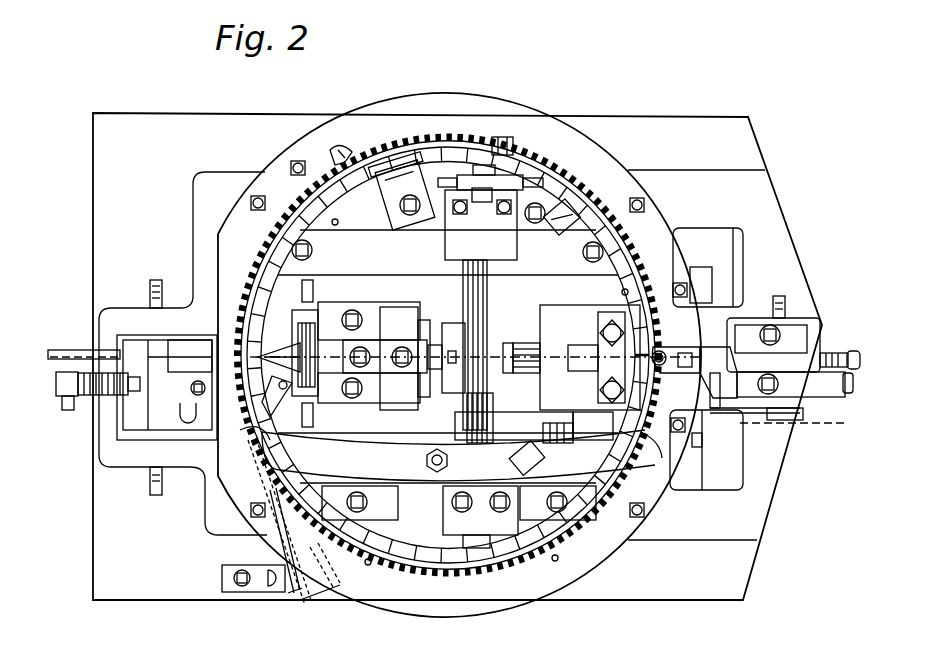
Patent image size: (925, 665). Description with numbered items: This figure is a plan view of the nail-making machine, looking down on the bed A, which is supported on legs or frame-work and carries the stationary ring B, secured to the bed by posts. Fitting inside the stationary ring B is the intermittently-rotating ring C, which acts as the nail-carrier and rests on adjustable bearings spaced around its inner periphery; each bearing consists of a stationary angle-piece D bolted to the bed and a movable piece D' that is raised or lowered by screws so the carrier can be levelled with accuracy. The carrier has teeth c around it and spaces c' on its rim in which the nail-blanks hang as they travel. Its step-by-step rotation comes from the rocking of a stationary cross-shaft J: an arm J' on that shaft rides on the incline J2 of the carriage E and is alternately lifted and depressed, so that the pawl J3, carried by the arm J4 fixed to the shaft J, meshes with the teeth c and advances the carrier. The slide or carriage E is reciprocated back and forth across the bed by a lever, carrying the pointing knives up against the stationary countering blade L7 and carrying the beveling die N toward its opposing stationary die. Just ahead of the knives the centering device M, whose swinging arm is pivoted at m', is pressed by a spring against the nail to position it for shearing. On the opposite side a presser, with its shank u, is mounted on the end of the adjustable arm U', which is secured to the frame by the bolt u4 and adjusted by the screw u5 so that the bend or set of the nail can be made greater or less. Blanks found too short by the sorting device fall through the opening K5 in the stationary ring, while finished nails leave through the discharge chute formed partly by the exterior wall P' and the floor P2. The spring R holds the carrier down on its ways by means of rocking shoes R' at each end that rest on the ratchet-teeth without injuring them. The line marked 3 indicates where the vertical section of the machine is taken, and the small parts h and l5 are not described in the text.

The bed A is at (457, 356).
The stationary ring B is at (448, 340).
The intermittently-rotating ring C is at (650, 262).
The teeth c is at (472, 254).
The spaces c' is at (454, 570).
The angle-piece D is at (448, 217).
The movable piece D' is at (387, 176).
The slide or carriage E is at (475, 353).
The stationary cross-shaft J is at (489, 345).
The arm J' is at (448, 418).
The incline J2 is at (585, 440).
The pawl J3 is at (440, 153).
The arm J4 is at (480, 180).
The opening K5 is at (345, 150).
The pawl pin h is at (340, 139).
The countering blade L7 is at (96, 350).
The collar l5 is at (453, 349).
The centering device M is at (279, 357).
The pivot m' is at (295, 378).
The die N is at (277, 398).
The spring R is at (458, 455).
The rocking shoes R' is at (451, 446).
The section line 3 is at (56, 360).
The shank u is at (676, 359).
The adjustable arm U' is at (745, 359).
The bolt u4 is at (778, 384).
The screw u5 is at (850, 393).
The exterior wall P' is at (282, 556).
The floor P2 is at (312, 606).